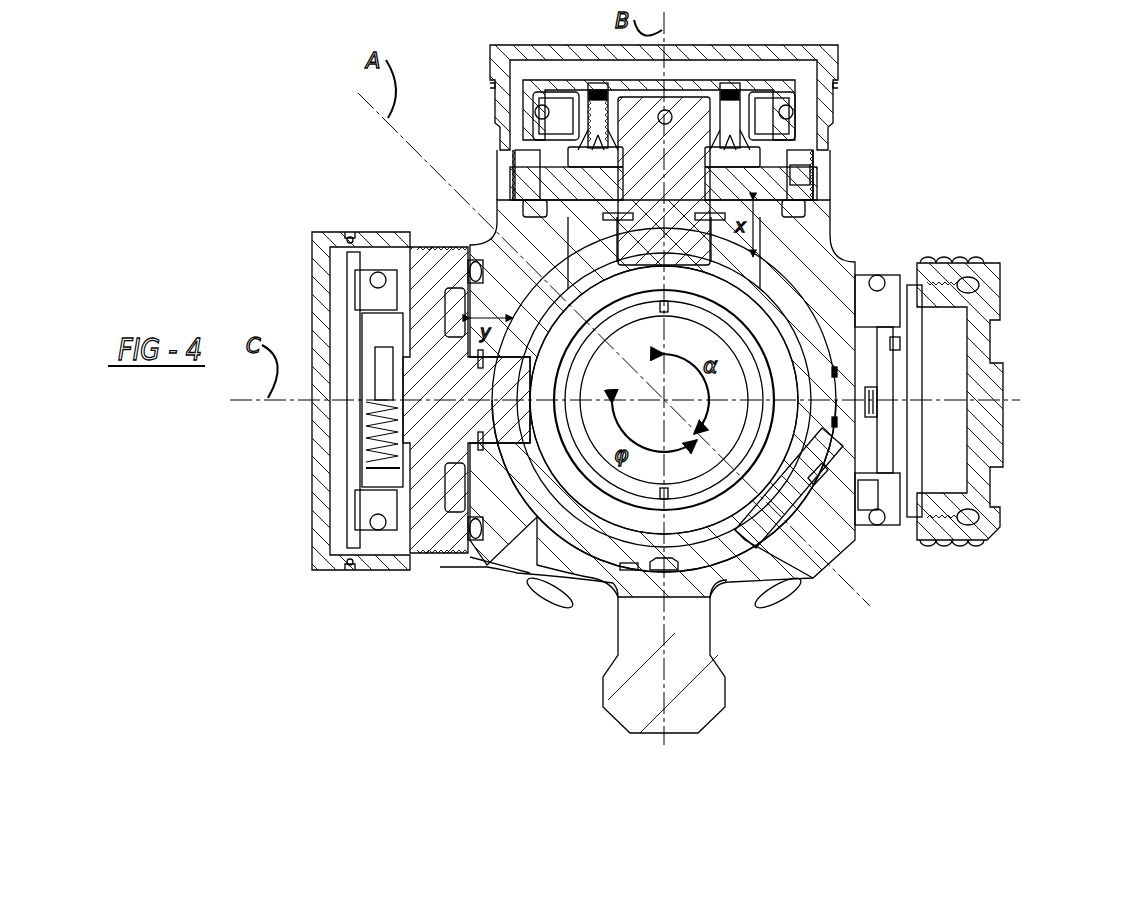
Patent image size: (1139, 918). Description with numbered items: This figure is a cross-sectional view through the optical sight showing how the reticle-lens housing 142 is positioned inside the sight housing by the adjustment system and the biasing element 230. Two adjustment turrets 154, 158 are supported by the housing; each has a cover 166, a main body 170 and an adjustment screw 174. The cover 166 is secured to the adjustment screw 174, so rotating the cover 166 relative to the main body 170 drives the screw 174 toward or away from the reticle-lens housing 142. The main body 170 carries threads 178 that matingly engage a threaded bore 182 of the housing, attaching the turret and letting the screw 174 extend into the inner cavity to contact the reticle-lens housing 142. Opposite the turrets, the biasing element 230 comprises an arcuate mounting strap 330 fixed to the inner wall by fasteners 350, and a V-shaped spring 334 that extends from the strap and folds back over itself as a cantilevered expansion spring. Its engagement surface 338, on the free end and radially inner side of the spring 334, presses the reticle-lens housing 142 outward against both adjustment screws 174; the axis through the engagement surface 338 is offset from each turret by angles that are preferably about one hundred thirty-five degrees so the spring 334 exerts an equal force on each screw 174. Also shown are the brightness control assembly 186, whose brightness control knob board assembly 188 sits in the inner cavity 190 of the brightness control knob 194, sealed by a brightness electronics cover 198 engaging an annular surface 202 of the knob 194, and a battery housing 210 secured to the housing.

The reticle-lens housing 142 is at (757, 300).
The adjustment turret 154 is at (630, 75).
The adjustment turret 158 is at (338, 457).
The cover 166 is at (757, 53).
The main body 170 is at (800, 193).
The adjustment screw 174 is at (657, 177).
The threads 178 is at (813, 195).
The threaded bore 182 is at (514, 180).
The brightness control assembly 186 is at (1012, 314).
The brightness control knob board assembly 188 is at (915, 377).
The inner cavity 190 is at (888, 490).
The brightness control knob 194 is at (933, 527).
The brightness electronics cover 198 is at (990, 295).
The annular surface 202 is at (960, 497).
The battery housing 210 is at (883, 423).
The biasing element 230 is at (763, 553).
The mounting strap 330 is at (730, 553).
The V-shaped spring 334 is at (780, 480).
The engagement surface 338 is at (747, 498).
The fasteners 350 is at (662, 563).